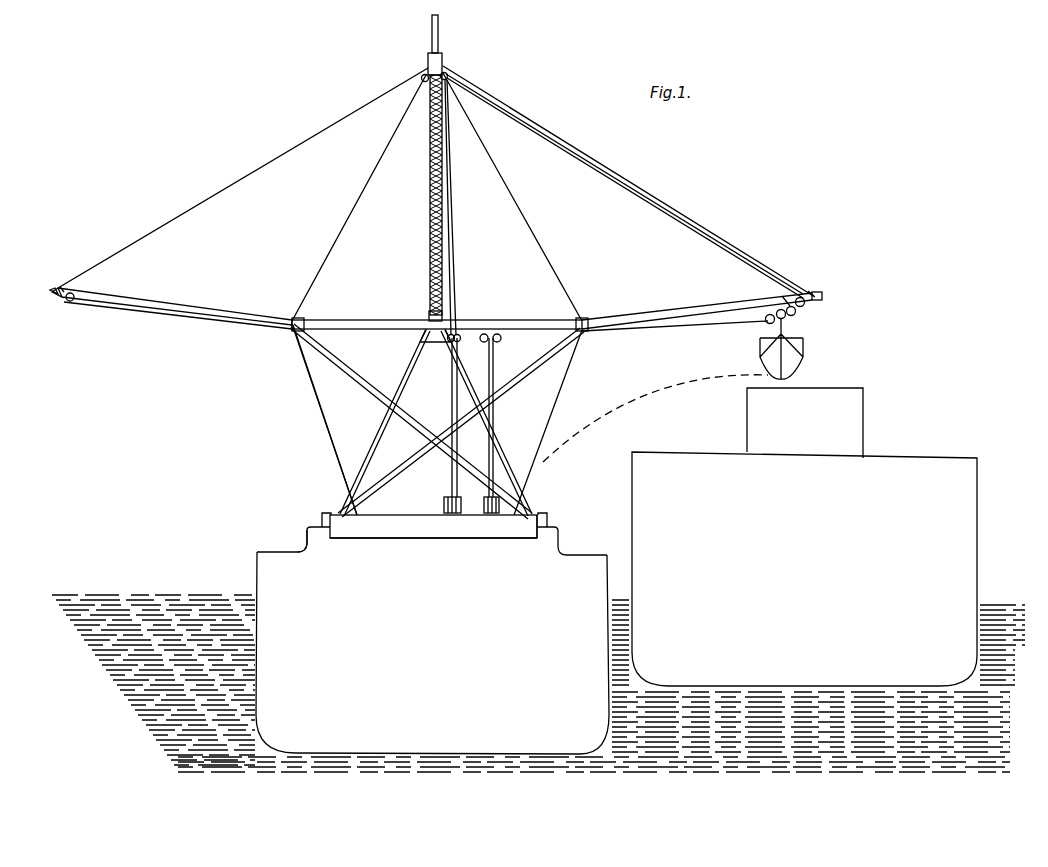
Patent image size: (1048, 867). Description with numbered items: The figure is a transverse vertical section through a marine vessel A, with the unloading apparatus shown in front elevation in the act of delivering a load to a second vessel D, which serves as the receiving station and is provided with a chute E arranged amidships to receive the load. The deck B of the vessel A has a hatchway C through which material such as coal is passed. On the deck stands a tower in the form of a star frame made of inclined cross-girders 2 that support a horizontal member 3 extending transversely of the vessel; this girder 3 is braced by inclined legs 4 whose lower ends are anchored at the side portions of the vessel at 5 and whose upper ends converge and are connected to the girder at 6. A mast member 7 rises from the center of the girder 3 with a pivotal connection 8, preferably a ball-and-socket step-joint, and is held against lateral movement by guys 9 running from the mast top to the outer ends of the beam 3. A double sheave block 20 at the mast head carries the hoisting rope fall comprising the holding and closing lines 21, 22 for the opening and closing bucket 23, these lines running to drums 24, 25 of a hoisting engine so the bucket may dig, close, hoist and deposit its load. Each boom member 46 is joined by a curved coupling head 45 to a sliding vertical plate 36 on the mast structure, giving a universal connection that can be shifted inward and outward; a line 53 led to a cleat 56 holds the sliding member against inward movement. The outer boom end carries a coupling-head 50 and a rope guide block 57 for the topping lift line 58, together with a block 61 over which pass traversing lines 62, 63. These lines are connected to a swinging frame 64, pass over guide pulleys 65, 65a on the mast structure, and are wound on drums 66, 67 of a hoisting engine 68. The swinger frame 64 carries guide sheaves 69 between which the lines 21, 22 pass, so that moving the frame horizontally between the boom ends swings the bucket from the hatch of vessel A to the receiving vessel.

The inclined cross-girders 2 is at (362, 390).
The horizontal member 3 is at (362, 321).
The inclined legs 4 is at (398, 388).
The leg anchorage 5 is at (324, 516).
The leg connection 6 is at (436, 345).
The mast member 7 is at (430, 215).
The pivotal connection 8 is at (430, 316).
The guys 9 is at (338, 252).
The double sheave block 20 is at (450, 73).
The holding line 21 is at (706, 278).
The closing line 22 is at (720, 272).
The opening and closing bucket 23 is at (804, 366).
The drum 24 is at (444, 505).
The drum 25 is at (483, 506).
The vertical plate 36 is at (305, 320).
The curved coupling head 45 is at (300, 318).
The boom member 46 is at (150, 302).
The coupling-head 50 is at (53, 294).
The line 53 is at (335, 425).
The cleat 56 is at (365, 485).
The rope guide block 57 is at (66, 288).
The topping lift line 58 is at (212, 203).
The rope guide block 61 is at (70, 302).
The traversing line 62 is at (170, 322).
The traversing line 63 is at (495, 356).
The swinging frame 64 is at (768, 323).
The guide pulley 65 is at (460, 341).
The guide pulley 65a is at (487, 334).
The drum 66 is at (488, 500).
The drum 67 is at (520, 530).
The hoisting engine 68 is at (496, 540).
The guide sheaves 69 is at (770, 324).
The marine vessel A is at (432, 640).
The deck B is at (288, 550).
The hatchway C is at (472, 540).
The receiving station D is at (804, 569).
The chute E is at (863, 415).